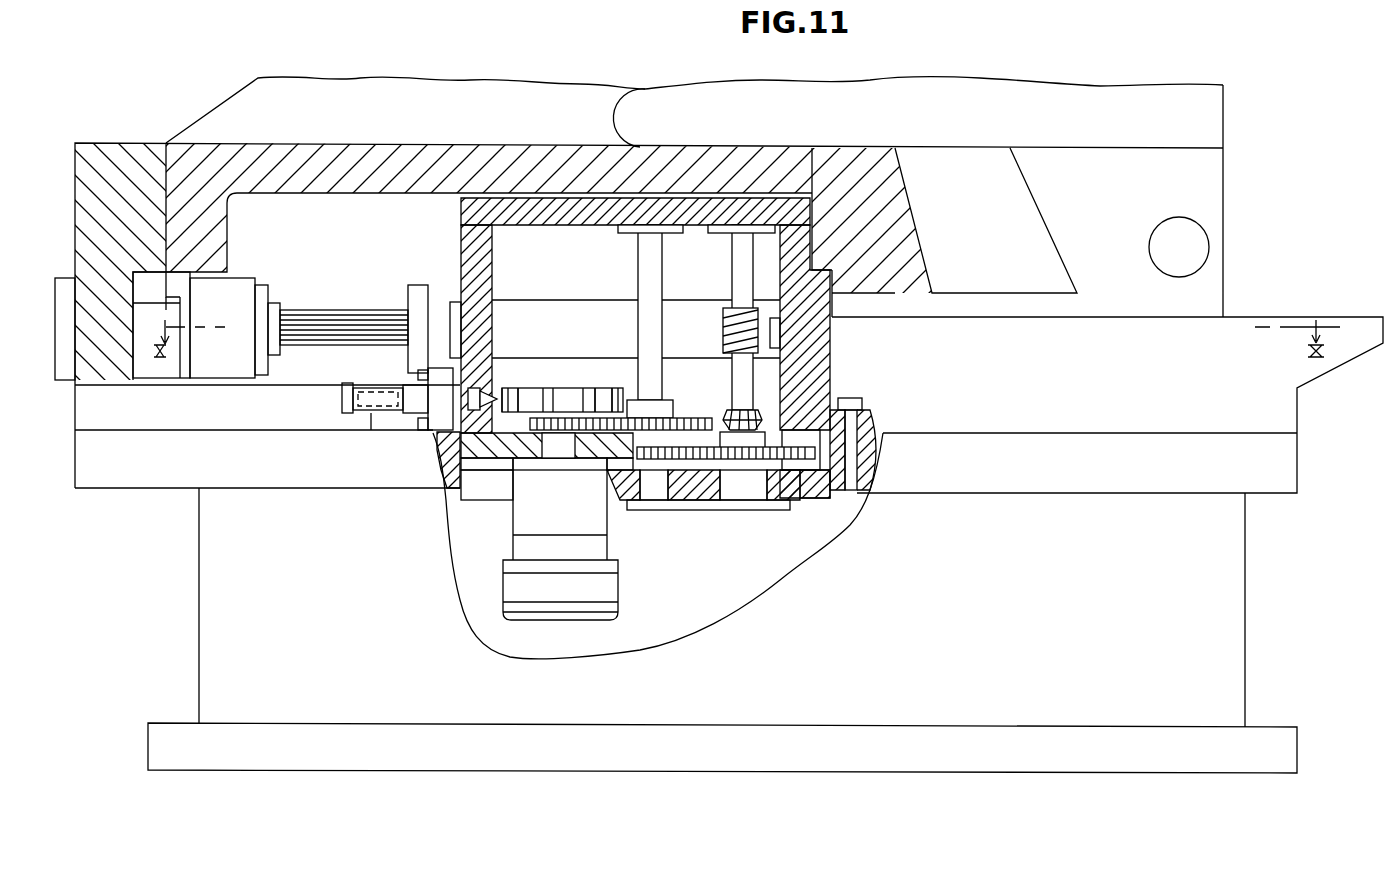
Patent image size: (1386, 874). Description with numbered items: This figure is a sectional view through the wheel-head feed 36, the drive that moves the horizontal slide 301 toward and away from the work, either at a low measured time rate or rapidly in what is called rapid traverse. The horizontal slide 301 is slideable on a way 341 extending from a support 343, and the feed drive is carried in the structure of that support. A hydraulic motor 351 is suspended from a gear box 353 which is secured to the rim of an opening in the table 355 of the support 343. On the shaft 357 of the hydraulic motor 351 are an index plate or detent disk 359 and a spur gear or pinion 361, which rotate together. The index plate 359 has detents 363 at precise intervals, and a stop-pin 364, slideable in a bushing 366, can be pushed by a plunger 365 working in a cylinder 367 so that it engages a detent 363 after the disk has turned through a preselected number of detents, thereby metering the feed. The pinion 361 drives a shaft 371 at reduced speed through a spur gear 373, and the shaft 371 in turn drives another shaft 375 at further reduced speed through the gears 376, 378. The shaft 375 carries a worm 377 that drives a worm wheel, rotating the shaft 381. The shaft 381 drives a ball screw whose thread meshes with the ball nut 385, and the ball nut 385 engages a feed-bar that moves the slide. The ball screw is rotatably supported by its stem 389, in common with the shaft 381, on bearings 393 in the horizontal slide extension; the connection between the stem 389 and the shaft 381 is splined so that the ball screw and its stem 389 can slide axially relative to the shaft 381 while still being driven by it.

The horizontal slide 301 is at (164, 135).
The bearings 393 is at (115, 138).
The ball nut 385 is at (270, 282).
The stem 389 is at (331, 340).
The cylinder 367 is at (343, 402).
The plunger 365 is at (393, 393).
The bushing 366 is at (431, 432).
The stop-pin 364 is at (483, 393).
The detents 363 is at (514, 395).
The shaft 357 is at (566, 408).
The index plate 359 is at (624, 392).
The shaft 381 is at (546, 306).
The shaft 371 is at (641, 262).
The shaft 375 is at (743, 274).
The worm 377 is at (731, 327).
The spur gear 373 is at (722, 396).
The gear 376 is at (660, 445).
The gear 378 is at (800, 492).
The gear box 353 is at (828, 348).
The table 355 is at (317, 490).
The pinion 361 is at (565, 440).
The hydraulic motor 351 is at (597, 548).
The wheel-head feed 36 is at (492, 557).
The support 343 is at (199, 612).
The way 341 is at (1356, 318).